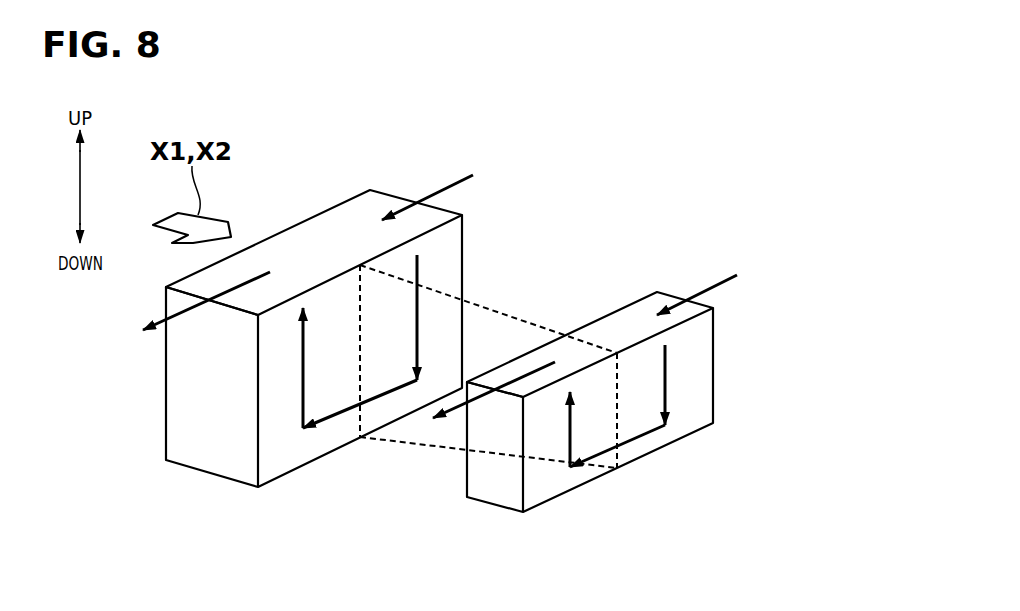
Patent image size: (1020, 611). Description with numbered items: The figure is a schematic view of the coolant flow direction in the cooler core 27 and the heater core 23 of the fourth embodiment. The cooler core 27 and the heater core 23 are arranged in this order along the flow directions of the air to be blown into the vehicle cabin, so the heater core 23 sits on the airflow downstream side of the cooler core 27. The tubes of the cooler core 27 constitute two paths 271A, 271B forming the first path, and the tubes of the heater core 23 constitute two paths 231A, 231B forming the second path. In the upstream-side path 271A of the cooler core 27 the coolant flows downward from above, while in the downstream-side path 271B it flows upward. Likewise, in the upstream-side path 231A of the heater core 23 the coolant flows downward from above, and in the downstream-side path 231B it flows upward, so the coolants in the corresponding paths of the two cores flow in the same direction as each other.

The cooler core 27 is at (280, 232).
The heater core 23 is at (625, 305).
The upstream-side path of the cooler core 271A is at (422, 262).
The downstream-side path of the cooler core 271B is at (303, 370).
The upstream-side path of the heater core 231A is at (665, 360).
The downstream-side path of the heater core 231B is at (573, 437).